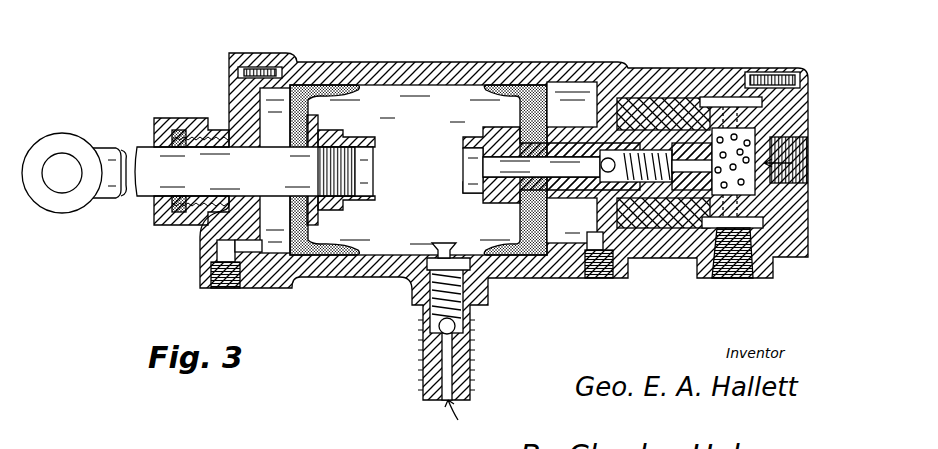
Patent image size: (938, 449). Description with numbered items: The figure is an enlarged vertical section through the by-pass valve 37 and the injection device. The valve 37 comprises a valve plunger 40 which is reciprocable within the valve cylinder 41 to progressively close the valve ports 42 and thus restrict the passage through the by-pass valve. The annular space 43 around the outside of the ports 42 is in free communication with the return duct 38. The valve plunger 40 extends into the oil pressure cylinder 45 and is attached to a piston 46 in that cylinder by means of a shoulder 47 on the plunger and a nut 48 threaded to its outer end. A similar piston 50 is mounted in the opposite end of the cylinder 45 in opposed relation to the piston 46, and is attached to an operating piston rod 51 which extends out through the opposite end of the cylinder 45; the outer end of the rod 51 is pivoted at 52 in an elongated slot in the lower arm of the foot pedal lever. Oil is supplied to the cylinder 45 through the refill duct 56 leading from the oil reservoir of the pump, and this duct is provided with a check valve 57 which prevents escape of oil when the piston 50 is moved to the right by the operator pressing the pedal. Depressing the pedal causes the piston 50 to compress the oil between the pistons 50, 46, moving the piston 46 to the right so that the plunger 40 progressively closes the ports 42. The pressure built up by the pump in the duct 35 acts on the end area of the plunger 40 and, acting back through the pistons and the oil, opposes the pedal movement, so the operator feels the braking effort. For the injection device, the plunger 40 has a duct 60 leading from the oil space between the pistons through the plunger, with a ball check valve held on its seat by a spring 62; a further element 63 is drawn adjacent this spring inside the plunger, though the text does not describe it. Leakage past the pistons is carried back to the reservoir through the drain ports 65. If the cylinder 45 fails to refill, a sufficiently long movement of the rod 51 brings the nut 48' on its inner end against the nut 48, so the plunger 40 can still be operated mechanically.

The duct 35 is at (806, 142).
The by-pass valve 37 is at (703, 77).
The return duct 38 is at (735, 283).
The valve plunger 40 is at (683, 130).
The valve cylinder 41 is at (658, 124).
The valve ports 42 is at (736, 152).
The annular space 43 is at (750, 96).
The oil pressure cylinder 45 is at (440, 106).
The piston 46 is at (535, 94).
The shoulder 47 is at (553, 187).
The nut 48 is at (550, 179).
The nut 48' is at (363, 180).
The piston 50 is at (314, 92).
The operating piston rod 51 is at (254, 171).
The pivot 52 is at (62, 168).
The refill duct 56 is at (449, 366).
The check valve 57 is at (450, 327).
The duct 60 is at (487, 167).
The spring 62 is at (606, 158).
The valve spring 63 is at (633, 150).
The drain ports 65 is at (228, 301).